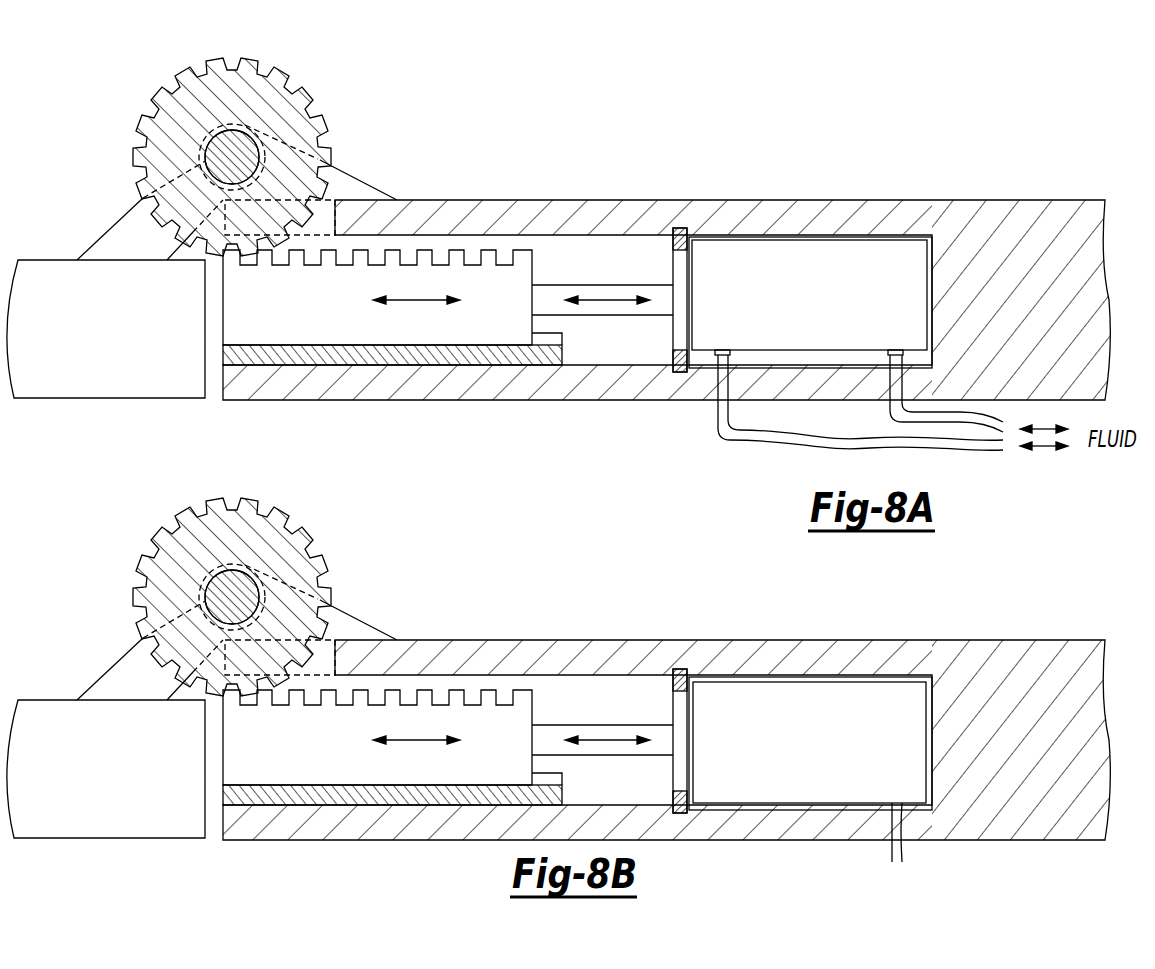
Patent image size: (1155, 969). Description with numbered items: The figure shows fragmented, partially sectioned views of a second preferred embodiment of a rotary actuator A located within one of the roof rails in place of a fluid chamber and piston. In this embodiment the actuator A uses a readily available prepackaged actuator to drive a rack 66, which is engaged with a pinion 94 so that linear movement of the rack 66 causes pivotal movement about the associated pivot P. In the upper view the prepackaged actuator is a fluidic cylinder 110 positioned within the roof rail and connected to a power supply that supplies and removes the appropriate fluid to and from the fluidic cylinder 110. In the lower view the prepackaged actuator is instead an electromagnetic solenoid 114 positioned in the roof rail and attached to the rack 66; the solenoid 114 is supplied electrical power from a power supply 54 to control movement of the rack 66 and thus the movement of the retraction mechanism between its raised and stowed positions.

In FIG. 8A, the pinion 94 is at (268, 90).
In FIG. 8B, the pinion 94 is at (239, 580).
In FIG. 8A, the pivot P is at (226, 157).
In FIG. 8B, the pivot P is at (181, 592).
In FIG. 8A, the rack 66 is at (316, 311).
In FIG. 8B, the rack 66 is at (377, 737).
In FIG. 8A, the fluidic cylinder 110 is at (789, 267).
In FIG. 8B, the electromagnetic solenoid 114 is at (732, 788).
In FIG. 8B, the power supply 54 is at (940, 847).
In FIG. 8A, the actuator A is at (425, 45).
In FIG. 8B, the actuator A is at (433, 508).